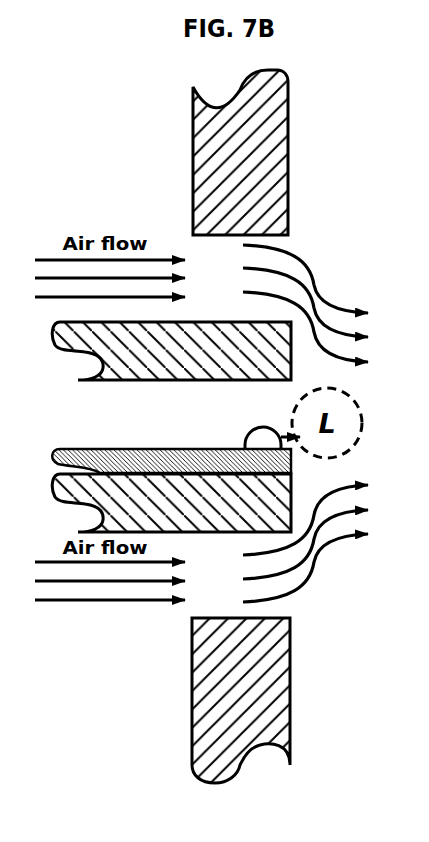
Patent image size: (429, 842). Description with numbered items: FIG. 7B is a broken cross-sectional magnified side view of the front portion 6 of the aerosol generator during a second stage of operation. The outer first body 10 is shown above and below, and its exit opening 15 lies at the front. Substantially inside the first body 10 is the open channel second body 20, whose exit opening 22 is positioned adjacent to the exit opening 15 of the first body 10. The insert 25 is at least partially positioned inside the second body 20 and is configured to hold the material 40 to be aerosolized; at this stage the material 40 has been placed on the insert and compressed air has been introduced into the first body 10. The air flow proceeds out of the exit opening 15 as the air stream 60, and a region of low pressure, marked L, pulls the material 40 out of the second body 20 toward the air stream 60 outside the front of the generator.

The first body 10 is at (193, 175).
The exit opening 15 is at (282, 248).
The front portion 6 is at (348, 260).
The second body 20 is at (57, 337).
The exit opening 22 is at (293, 406).
The insert 25 is at (57, 452).
The material 40 is at (248, 437).
The air stream 60 is at (398, 431).